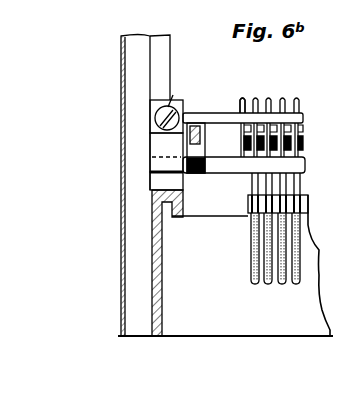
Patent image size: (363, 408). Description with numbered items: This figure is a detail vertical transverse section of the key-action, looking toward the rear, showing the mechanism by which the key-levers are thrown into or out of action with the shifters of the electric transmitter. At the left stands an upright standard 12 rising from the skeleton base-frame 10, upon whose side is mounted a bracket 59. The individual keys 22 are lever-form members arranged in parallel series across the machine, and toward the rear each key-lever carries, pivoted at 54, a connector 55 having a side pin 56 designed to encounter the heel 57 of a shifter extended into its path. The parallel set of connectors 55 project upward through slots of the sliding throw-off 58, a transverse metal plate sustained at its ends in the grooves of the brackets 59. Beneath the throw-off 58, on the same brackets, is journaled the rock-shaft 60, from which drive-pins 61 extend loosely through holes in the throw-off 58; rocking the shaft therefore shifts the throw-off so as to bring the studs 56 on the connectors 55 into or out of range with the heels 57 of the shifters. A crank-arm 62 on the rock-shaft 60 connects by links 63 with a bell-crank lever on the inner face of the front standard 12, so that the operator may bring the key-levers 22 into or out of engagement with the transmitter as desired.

The skeleton base-frame 10 is at (164, 246).
The upright standard 12 is at (145, 186).
The key 22 is at (256, 286).
The pivot 54 is at (312, 207).
The connector 55 is at (300, 101).
The side pin 56 is at (300, 131).
The heel 57 is at (300, 146).
The sliding throw-off 58 is at (213, 116).
The bracket 59 is at (166, 161).
The rock-shaft 60 is at (241, 174).
The drive-pin 61 is at (246, 99).
The crank-arm 62 is at (205, 148).
The link 63 is at (156, 137).